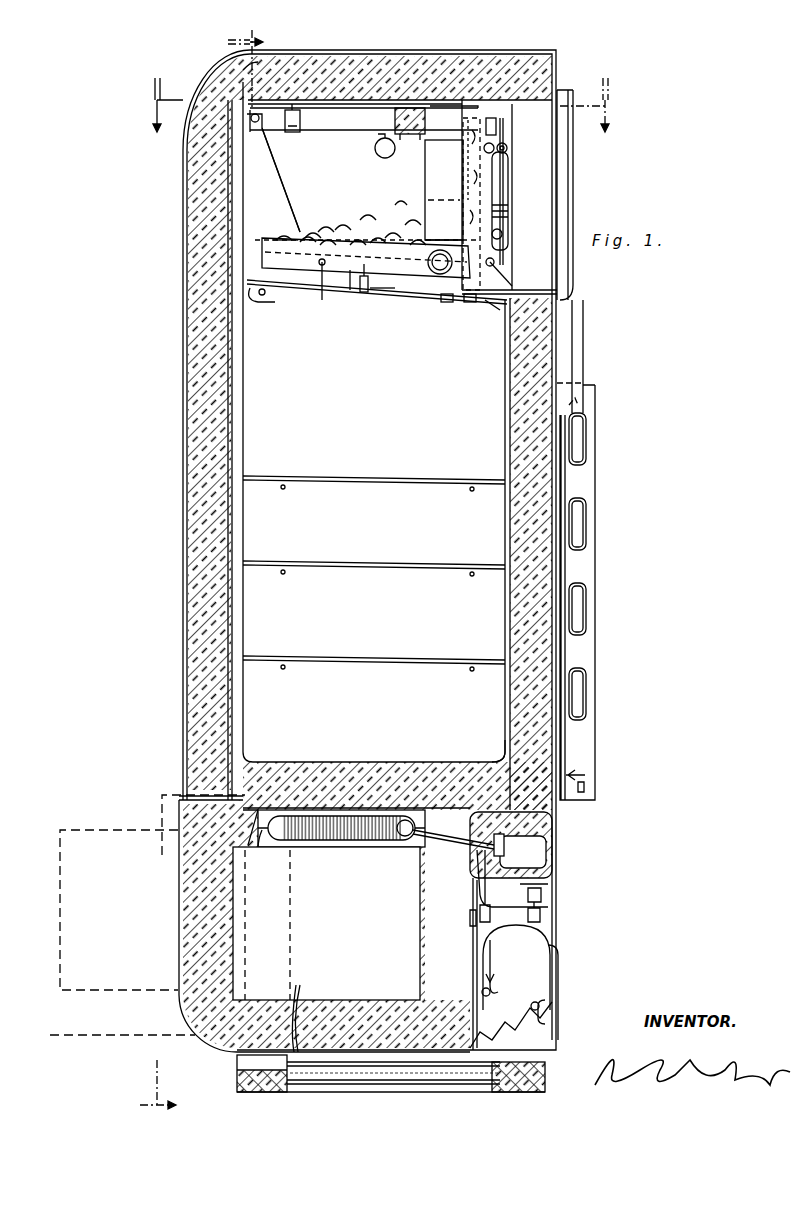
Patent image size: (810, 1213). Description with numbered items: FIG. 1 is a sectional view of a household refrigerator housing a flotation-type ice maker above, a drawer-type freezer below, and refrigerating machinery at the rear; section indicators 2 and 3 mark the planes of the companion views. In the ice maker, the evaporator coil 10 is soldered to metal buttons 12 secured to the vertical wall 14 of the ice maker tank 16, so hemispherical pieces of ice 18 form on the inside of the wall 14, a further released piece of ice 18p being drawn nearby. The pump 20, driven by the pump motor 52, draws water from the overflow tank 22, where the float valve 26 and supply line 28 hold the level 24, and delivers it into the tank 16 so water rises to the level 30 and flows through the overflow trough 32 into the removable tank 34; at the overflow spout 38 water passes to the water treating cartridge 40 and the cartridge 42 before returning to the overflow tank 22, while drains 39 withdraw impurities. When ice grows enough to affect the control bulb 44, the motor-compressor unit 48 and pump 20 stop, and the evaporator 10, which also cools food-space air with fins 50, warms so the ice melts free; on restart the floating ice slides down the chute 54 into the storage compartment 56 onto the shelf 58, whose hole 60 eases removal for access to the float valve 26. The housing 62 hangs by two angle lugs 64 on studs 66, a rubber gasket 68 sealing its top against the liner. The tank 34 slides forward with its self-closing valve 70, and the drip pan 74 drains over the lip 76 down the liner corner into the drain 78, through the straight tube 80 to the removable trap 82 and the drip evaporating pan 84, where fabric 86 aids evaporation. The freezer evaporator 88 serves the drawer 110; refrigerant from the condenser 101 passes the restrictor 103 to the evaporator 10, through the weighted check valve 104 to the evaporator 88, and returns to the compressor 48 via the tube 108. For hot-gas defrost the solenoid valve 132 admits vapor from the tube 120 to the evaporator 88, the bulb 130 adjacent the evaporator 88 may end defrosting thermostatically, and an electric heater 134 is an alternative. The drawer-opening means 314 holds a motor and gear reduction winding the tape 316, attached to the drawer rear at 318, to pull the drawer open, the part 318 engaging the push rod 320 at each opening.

The section line 2- 2 is at (216, 573).
The section line 3- 3 is at (377, 119).
The evaporator coil 10 is at (507, 196).
The metal buttons 12 is at (502, 236).
The vertical wall 14 is at (502, 168).
The ice maker tank 16 is at (464, 204).
The pieces of ice 18 is at (370, 200).
The ice piece 18' 18p is at (506, 256).
The pump 20 is at (432, 296).
The overflow tank 22 is at (367, 258).
The water level 24 is at (325, 270).
The float valve 26 is at (350, 278).
The supply line 28 is at (380, 292).
The water level 30 is at (478, 100).
The overflow trough 32 is at (433, 108).
The removable tank 34 is at (345, 128).
The overflow spout 38 is at (394, 150).
The drains 39 is at (470, 302).
The water treating cartridge 40 is at (444, 190).
The cartridge 42 is at (444, 223).
The control bulb 44 is at (500, 128).
The motor-compressor unit 48 is at (516, 967).
The fins 50 is at (507, 210).
The pump motor 52 is at (447, 302).
The chute 54 is at (395, 118).
The storage compartment 56 is at (330, 158).
The shelf 58 is at (318, 232).
The hole 60 is at (284, 232).
The housing 62 is at (252, 119).
The angle lugs 64 is at (301, 121).
The studs 66 is at (318, 104).
The rubber gasket 68 is at (250, 80).
The self-closing valve 70 is at (270, 292).
The drip pan 74 is at (366, 292).
The lip 76 is at (495, 308).
The drain 78 is at (490, 760).
The tube 80 is at (425, 893).
The removable trap 82 is at (492, 910).
The drip evaporating pan 84 is at (342, 1090).
The fabric 86 is at (492, 1078).
The freezer evaporator 88 is at (272, 840).
The condenser 101 is at (596, 506).
The restrictor 103 is at (507, 146).
The weighted check valve 104 is at (505, 845).
The tube 108 is at (494, 986).
The drawer 110 is at (326, 923).
The tube 120 is at (560, 975).
The bulb 130 is at (263, 850).
The solenoid valve 132 is at (548, 890).
The electric heater 134 is at (403, 836).
The drawer-opening means 314 is at (240, 1065).
The tape 316 is at (372, 1078).
The tape attachment part 318 is at (478, 1036).
The push rod 320 is at (297, 1010).